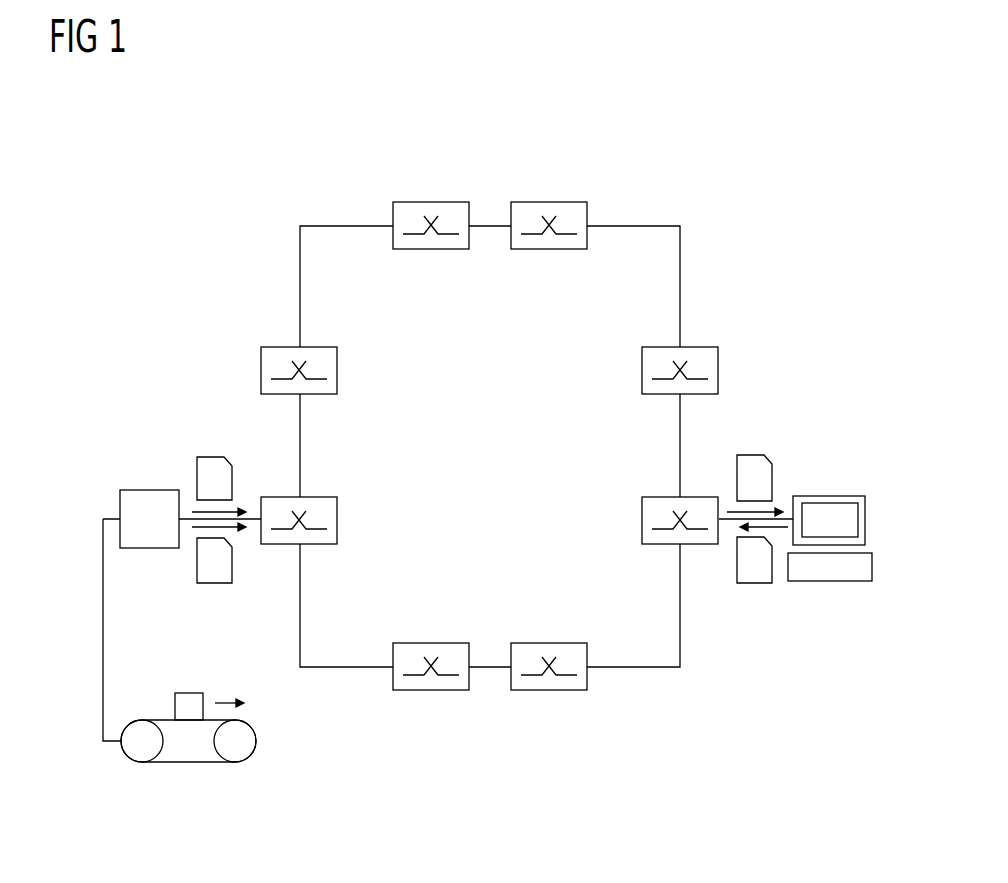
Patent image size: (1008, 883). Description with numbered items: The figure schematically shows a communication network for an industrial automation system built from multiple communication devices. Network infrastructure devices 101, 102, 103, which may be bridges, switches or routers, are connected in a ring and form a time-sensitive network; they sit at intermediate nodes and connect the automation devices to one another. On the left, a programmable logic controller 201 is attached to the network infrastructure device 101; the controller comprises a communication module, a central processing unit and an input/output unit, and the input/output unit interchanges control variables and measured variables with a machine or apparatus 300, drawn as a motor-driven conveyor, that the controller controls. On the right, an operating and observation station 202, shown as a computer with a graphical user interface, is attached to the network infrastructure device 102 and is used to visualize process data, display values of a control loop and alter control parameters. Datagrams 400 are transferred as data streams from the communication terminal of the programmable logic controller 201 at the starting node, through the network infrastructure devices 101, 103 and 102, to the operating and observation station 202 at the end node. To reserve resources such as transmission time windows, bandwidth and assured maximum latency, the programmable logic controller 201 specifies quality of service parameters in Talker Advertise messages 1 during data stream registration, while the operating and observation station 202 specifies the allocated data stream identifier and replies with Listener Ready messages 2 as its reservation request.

The network infrastructure device 103 is at (425, 202).
The network infrastructure device 101 is at (339, 530).
The network infrastructure device 102 is at (642, 520).
The programmable logic controller 201 is at (152, 548).
The datagram 400 is at (206, 457).
The Talker Advertise message 1 is at (212, 583).
The Listener Ready message 2 is at (752, 583).
The operating and observation station 202 is at (833, 581).
The machine or apparatus 300 is at (190, 762).